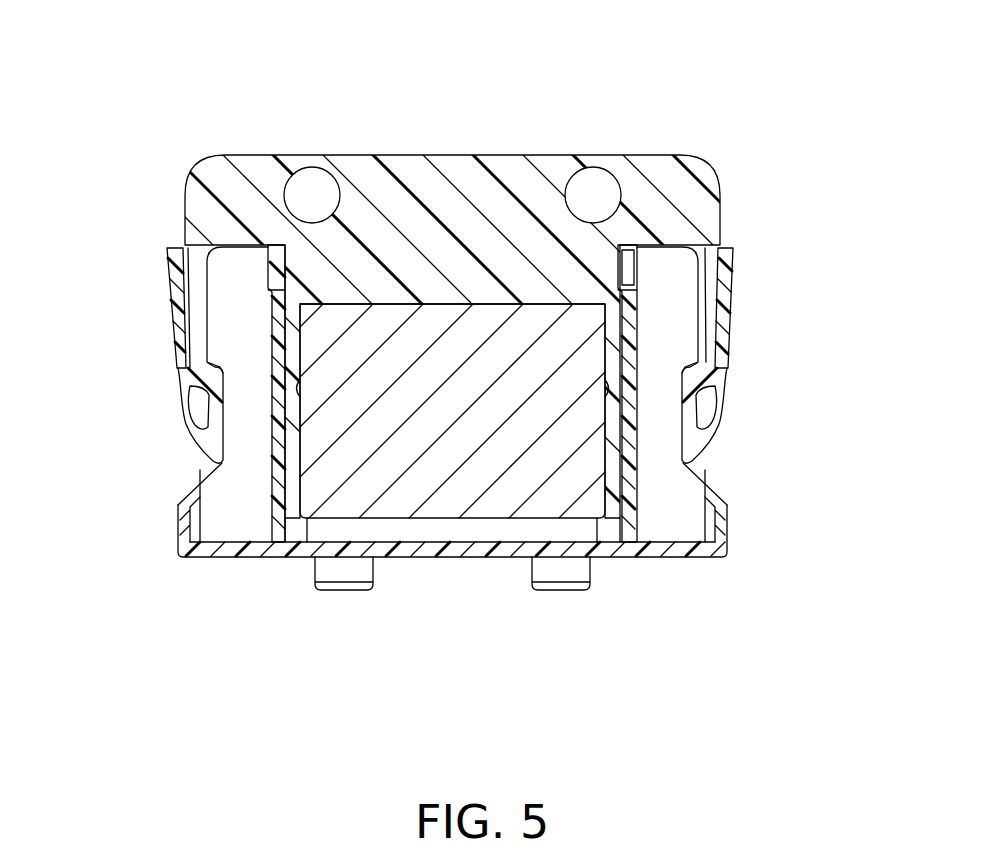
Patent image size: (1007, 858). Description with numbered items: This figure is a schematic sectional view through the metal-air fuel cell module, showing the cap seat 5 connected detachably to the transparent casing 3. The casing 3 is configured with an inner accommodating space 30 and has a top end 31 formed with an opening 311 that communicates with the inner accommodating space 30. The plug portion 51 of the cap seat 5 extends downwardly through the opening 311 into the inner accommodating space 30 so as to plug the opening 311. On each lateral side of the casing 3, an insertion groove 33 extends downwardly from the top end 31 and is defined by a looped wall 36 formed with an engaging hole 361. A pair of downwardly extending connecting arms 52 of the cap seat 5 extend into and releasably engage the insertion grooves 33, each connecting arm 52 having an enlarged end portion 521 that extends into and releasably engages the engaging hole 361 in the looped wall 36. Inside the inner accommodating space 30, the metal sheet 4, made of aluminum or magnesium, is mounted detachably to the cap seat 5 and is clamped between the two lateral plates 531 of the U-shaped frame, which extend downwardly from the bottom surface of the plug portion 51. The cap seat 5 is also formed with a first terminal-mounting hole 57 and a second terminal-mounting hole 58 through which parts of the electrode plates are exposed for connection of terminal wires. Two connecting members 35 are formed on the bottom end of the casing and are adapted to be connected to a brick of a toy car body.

The casing 3 is at (747, 297).
The inner accommodating space 30 is at (580, 527).
The top end 31 is at (186, 247).
The opening 311 is at (623, 262).
The insertion groove 33 is at (204, 333).
The connecting member 35 is at (347, 591).
The looped wall 36 is at (735, 257).
The engaging hole 361 is at (190, 457).
The metal sheet 4 is at (461, 532).
The cap seat 5 is at (656, 148).
The plug portion 51 is at (421, 273).
The connecting arm 52 is at (178, 278).
The enlarged end portion 521 is at (187, 403).
The lateral plate 531 is at (240, 350).
The first terminal-mounting hole 57 is at (312, 190).
The second terminal-mounting hole 58 is at (587, 185).